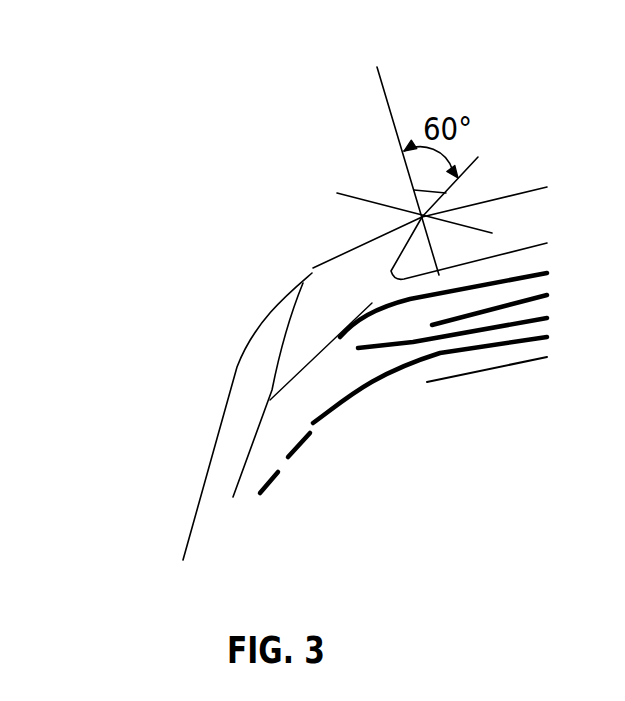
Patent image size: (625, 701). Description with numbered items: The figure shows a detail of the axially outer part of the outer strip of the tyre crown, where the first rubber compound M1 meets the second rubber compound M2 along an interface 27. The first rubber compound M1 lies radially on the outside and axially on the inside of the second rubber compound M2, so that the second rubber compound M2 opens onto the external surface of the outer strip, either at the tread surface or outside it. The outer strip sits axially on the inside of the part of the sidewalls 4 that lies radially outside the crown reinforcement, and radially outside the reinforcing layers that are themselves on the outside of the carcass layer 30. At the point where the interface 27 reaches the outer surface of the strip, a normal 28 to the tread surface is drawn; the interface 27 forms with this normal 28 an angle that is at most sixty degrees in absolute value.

The sidewalls 4 is at (248, 377).
The interface 27 is at (390, 261).
The normal to the tread surface 28 is at (389, 104).
The carcass layer 30 is at (358, 402).
The first rubber compound M1 is at (525, 218).
The second rubber compound M2 is at (335, 288).